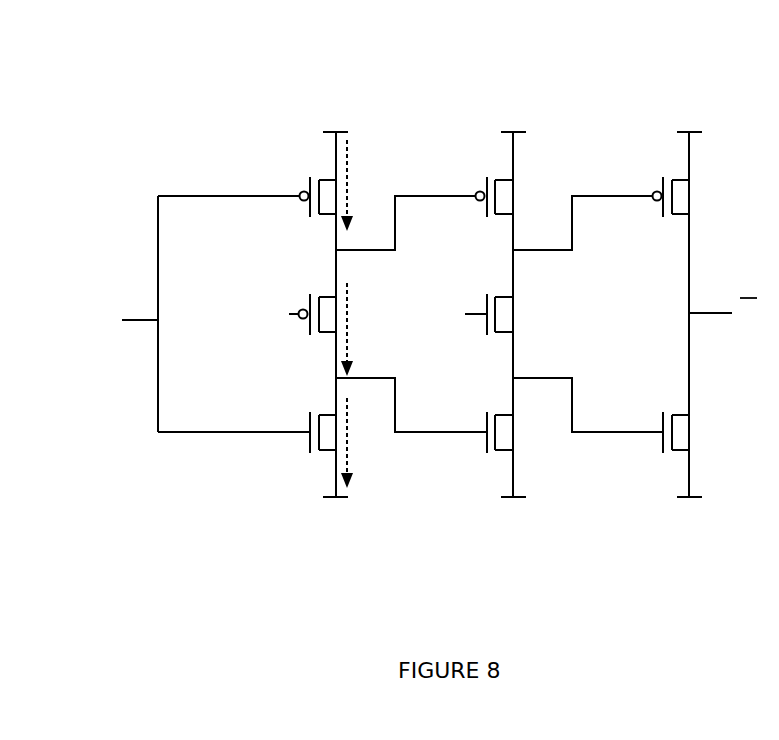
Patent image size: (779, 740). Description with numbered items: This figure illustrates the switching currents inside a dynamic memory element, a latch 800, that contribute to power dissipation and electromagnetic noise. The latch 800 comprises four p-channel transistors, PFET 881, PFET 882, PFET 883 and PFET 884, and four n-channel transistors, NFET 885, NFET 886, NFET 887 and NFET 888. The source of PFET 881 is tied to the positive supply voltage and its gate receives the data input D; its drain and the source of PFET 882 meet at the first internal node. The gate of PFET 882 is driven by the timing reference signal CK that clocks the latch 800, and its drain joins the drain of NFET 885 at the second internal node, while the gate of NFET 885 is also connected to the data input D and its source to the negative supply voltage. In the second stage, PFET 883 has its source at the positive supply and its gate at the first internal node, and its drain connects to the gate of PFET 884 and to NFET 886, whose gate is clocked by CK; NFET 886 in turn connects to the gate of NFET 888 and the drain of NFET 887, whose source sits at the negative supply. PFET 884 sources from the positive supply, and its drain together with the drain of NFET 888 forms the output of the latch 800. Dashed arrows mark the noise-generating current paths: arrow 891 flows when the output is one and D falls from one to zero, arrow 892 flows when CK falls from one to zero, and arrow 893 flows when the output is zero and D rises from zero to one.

The latch 800 is at (88, 34).
The PFET 881 is at (320, 178).
The PFET 882 is at (320, 296).
The PFET 883 is at (496, 178).
The PFET 884 is at (673, 178).
The NFET 885 is at (320, 414).
The NFET 886 is at (496, 296).
The NFET 887 is at (496, 414).
The NFET 888 is at (673, 414).
The current arrow 891 is at (350, 152).
The current arrow 892 is at (350, 318).
The current arrow 893 is at (350, 463).